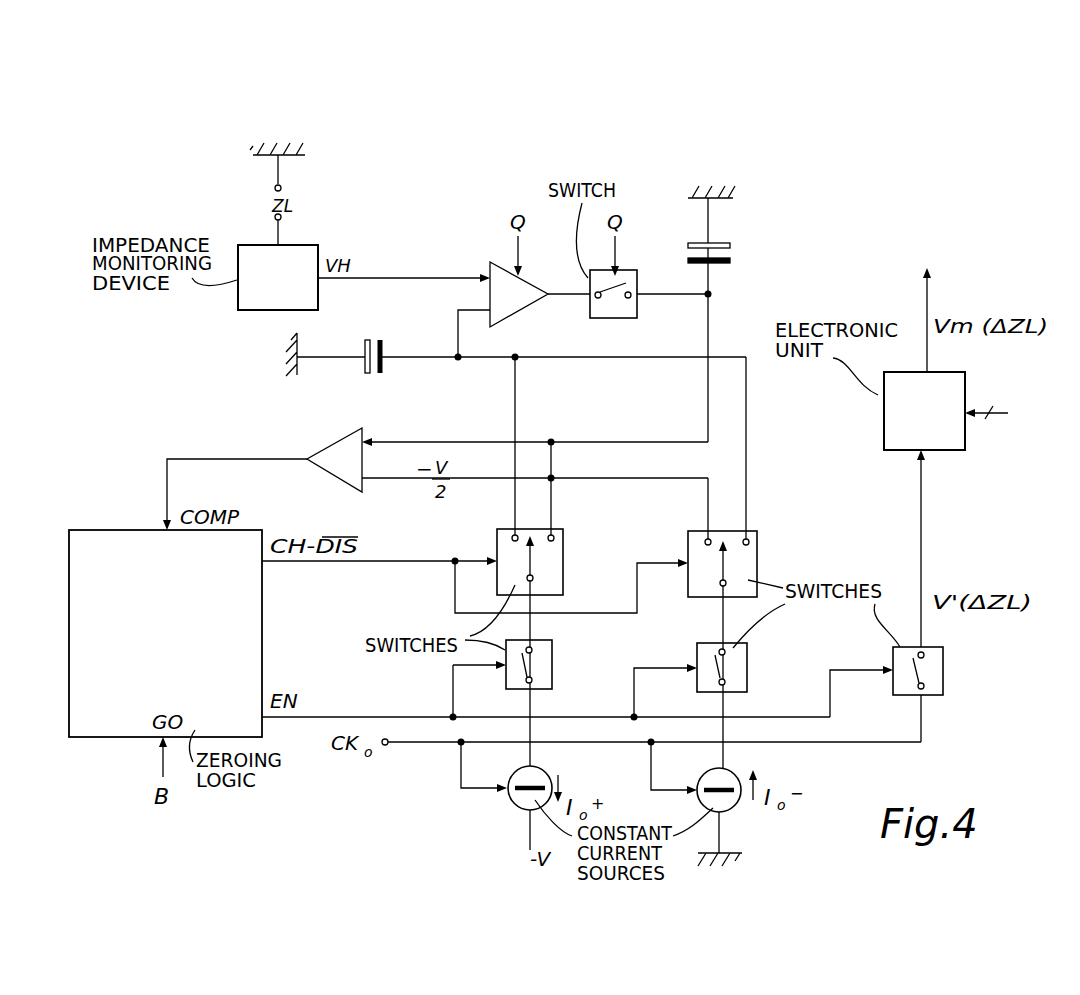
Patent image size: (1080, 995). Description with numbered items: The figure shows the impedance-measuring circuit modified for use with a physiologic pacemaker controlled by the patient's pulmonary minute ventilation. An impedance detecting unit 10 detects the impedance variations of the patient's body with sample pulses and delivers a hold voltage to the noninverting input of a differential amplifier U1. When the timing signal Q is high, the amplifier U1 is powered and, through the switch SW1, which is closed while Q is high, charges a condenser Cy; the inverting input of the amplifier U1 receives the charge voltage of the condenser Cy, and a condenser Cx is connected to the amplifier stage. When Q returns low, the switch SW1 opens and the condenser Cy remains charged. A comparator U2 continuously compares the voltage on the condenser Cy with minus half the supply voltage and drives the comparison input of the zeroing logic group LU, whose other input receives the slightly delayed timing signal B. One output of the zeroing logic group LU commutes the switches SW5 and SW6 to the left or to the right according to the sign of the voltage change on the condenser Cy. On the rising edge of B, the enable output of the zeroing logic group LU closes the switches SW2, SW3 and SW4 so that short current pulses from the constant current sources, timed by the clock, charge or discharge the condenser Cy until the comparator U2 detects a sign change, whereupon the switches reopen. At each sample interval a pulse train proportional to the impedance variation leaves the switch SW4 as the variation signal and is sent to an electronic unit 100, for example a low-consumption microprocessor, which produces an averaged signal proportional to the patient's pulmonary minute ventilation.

The impedance detecting unit 10 is at (278, 277).
The electronic unit 100 is at (924, 411).
The differential amplifier U1 is at (519, 294).
The comparator U2 is at (334, 460).
The switch SW1 is at (613, 307).
The switch SW2 is at (555, 653).
The switch SW3 is at (751, 659).
The switch SW4 is at (946, 666).
The switch SW5 is at (552, 549).
The switch SW6 is at (749, 553).
The condenser Cx is at (376, 342).
The condenser Cy is at (732, 255).
The zeroing logic group LU is at (165, 633).